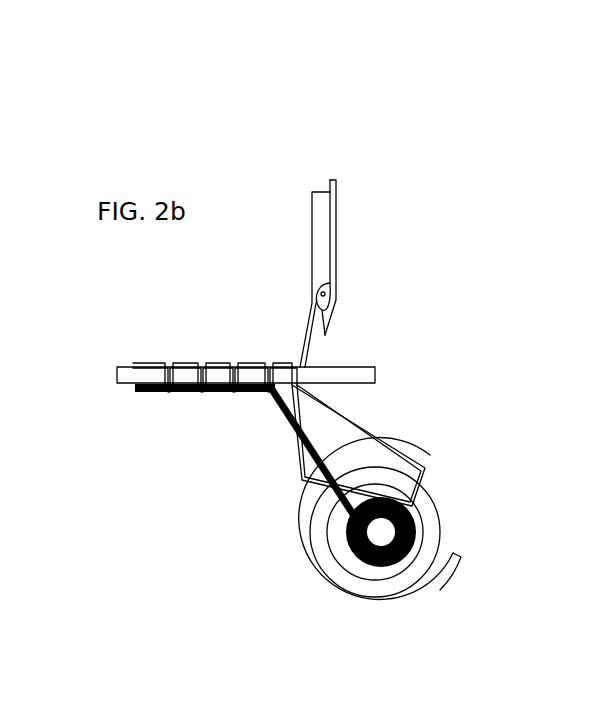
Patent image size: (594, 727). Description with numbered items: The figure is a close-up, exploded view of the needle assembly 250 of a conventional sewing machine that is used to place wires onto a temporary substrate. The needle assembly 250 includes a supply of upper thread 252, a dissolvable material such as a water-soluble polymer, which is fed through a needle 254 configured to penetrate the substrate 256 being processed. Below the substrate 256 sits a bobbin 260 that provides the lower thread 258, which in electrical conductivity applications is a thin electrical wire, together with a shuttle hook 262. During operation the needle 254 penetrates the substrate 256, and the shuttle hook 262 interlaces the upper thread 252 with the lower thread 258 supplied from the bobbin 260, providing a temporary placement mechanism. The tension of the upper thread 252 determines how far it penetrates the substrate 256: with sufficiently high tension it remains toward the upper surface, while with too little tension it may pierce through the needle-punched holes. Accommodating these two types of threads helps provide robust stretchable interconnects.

The needle assembly 250 is at (231, 132).
The upper thread 252 is at (338, 183).
The needle 254 is at (312, 248).
The substrate 256 is at (118, 365).
The lower thread 258 is at (287, 417).
The bobbin 260 is at (433, 518).
The shuttle hook 262 is at (463, 552).